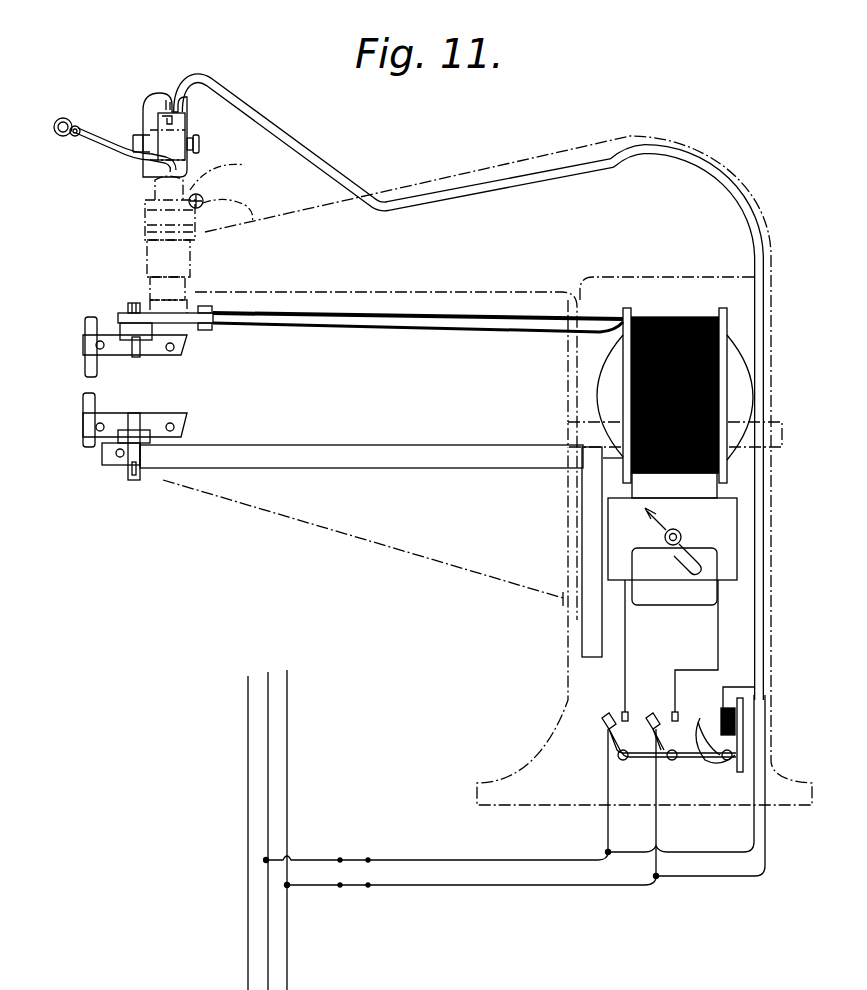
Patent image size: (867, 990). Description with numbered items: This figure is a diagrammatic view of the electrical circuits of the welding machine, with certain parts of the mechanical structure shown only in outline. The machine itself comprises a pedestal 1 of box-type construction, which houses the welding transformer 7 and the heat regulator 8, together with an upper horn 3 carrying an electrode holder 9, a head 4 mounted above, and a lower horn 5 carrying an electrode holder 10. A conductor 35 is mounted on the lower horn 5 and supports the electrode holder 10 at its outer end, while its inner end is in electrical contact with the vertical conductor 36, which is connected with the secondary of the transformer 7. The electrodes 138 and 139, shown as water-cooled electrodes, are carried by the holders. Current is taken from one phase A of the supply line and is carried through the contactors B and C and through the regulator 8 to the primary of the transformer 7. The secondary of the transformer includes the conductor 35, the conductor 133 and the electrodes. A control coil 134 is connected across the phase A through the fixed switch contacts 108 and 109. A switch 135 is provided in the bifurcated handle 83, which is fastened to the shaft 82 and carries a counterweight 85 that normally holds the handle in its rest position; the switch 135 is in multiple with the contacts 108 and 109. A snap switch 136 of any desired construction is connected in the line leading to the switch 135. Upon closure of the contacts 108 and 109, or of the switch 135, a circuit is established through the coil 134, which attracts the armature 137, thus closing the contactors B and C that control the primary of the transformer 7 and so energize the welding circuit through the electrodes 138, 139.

The pedestal 1 is at (771, 581).
The upper horn 3 is at (468, 389).
The head 4 is at (146, 255).
The lower horn 5 is at (358, 528).
The welding transformer 7 is at (680, 318).
The heat regulator 8 is at (672, 609).
The electrode holder 9 is at (178, 352).
The electrode holder 10 is at (175, 413).
The conductor 35 is at (370, 441).
The vertical conductor 36 is at (588, 534).
The shaft 82 is at (205, 194).
The bifurcated handle 83 is at (108, 160).
The counterweight 85 is at (252, 203).
The fixed contact 108 is at (182, 107).
The fixed contact 109 is at (166, 108).
The conductor 133 is at (335, 331).
The control coil 134 is at (735, 713).
The switch 135 is at (105, 120).
The snap switch 136 is at (199, 143).
The armature 137 is at (705, 708).
The electrode 138 is at (86, 367).
The electrode 139 is at (85, 406).
The phase of the supply line A is at (262, 752).
The contactor B is at (615, 712).
The contactor C is at (667, 712).